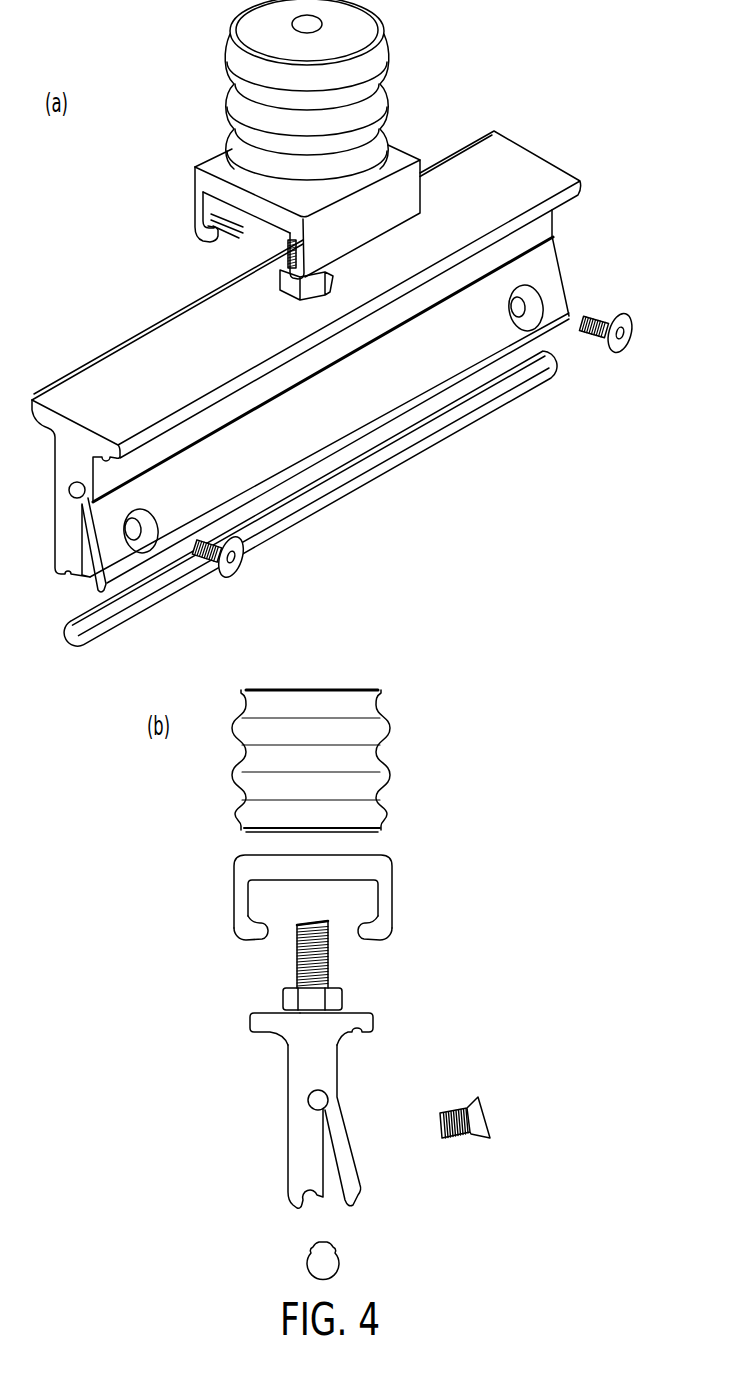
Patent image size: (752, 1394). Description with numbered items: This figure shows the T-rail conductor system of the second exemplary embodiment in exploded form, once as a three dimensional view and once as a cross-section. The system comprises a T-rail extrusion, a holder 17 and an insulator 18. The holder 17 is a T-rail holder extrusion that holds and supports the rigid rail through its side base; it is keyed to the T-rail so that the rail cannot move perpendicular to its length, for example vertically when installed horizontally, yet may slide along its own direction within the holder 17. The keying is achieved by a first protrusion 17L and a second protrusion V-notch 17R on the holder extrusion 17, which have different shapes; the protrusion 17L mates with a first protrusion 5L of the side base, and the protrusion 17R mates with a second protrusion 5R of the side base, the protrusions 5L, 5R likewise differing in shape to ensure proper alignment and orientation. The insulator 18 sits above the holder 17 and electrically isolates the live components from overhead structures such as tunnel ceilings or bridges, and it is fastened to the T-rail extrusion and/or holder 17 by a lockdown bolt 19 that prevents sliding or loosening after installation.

The holder 17 is at (393, 157).
The insulator 18 is at (362, 23).
The lockdown bolt 19 is at (320, 975).
The first protrusion 17L is at (252, 928).
The second protrusion V-notch 17R is at (380, 933).
The first protrusion 5L is at (257, 1023).
The second protrusion 5R is at (365, 1022).